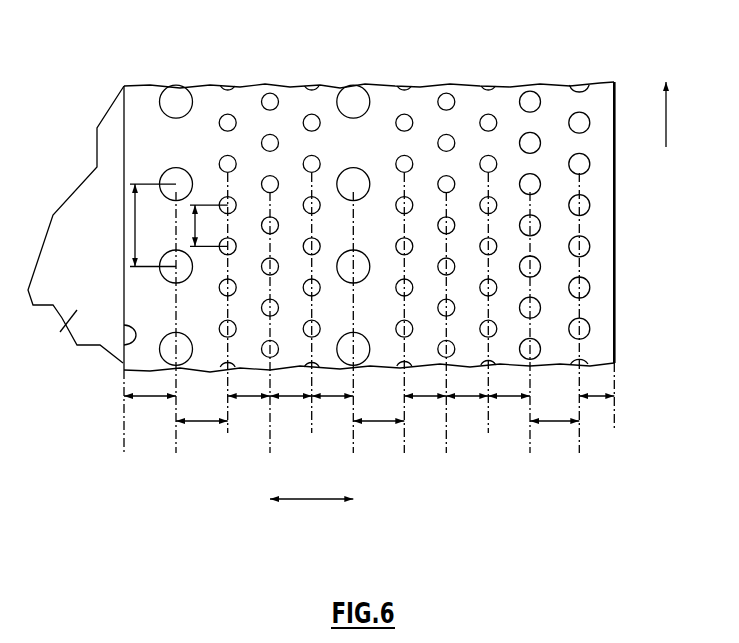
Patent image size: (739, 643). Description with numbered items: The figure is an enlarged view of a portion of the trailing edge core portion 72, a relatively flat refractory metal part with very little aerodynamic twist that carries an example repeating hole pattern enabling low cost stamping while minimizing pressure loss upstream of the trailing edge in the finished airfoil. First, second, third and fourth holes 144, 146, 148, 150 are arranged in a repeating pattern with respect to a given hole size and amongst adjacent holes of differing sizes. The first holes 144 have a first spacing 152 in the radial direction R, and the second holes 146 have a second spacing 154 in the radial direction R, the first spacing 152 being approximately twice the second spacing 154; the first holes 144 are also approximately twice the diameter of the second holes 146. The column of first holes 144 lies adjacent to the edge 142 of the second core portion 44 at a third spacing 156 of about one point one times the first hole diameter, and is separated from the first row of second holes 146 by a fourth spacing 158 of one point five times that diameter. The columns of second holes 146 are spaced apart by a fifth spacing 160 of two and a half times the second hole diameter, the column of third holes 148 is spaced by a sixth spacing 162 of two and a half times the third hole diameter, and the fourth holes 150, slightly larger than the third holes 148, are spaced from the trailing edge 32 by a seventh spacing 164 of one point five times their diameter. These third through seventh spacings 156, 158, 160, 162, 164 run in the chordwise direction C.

The trailing edge 32 is at (616, 268).
The second core portion 44 is at (62, 328).
The trailing edge core portion 72 is at (600, 228).
The edge 142 is at (128, 343).
The first holes 144 is at (177, 95).
The second holes 146 is at (322, 71).
The third holes 148 is at (528, 92).
The fourth holes 150 is at (579, 112).
The first spacing 152 is at (135, 232).
The second spacing 154 is at (193, 225).
The third spacing 156 is at (147, 397).
The fourth spacing 158 is at (197, 423).
The fifth spacing 160 is at (247, 398).
The sixth spacing 162 is at (553, 423).
The seventh spacing 164 is at (597, 399).
The radial direction R is at (666, 128).
The chordwise direction C is at (310, 500).